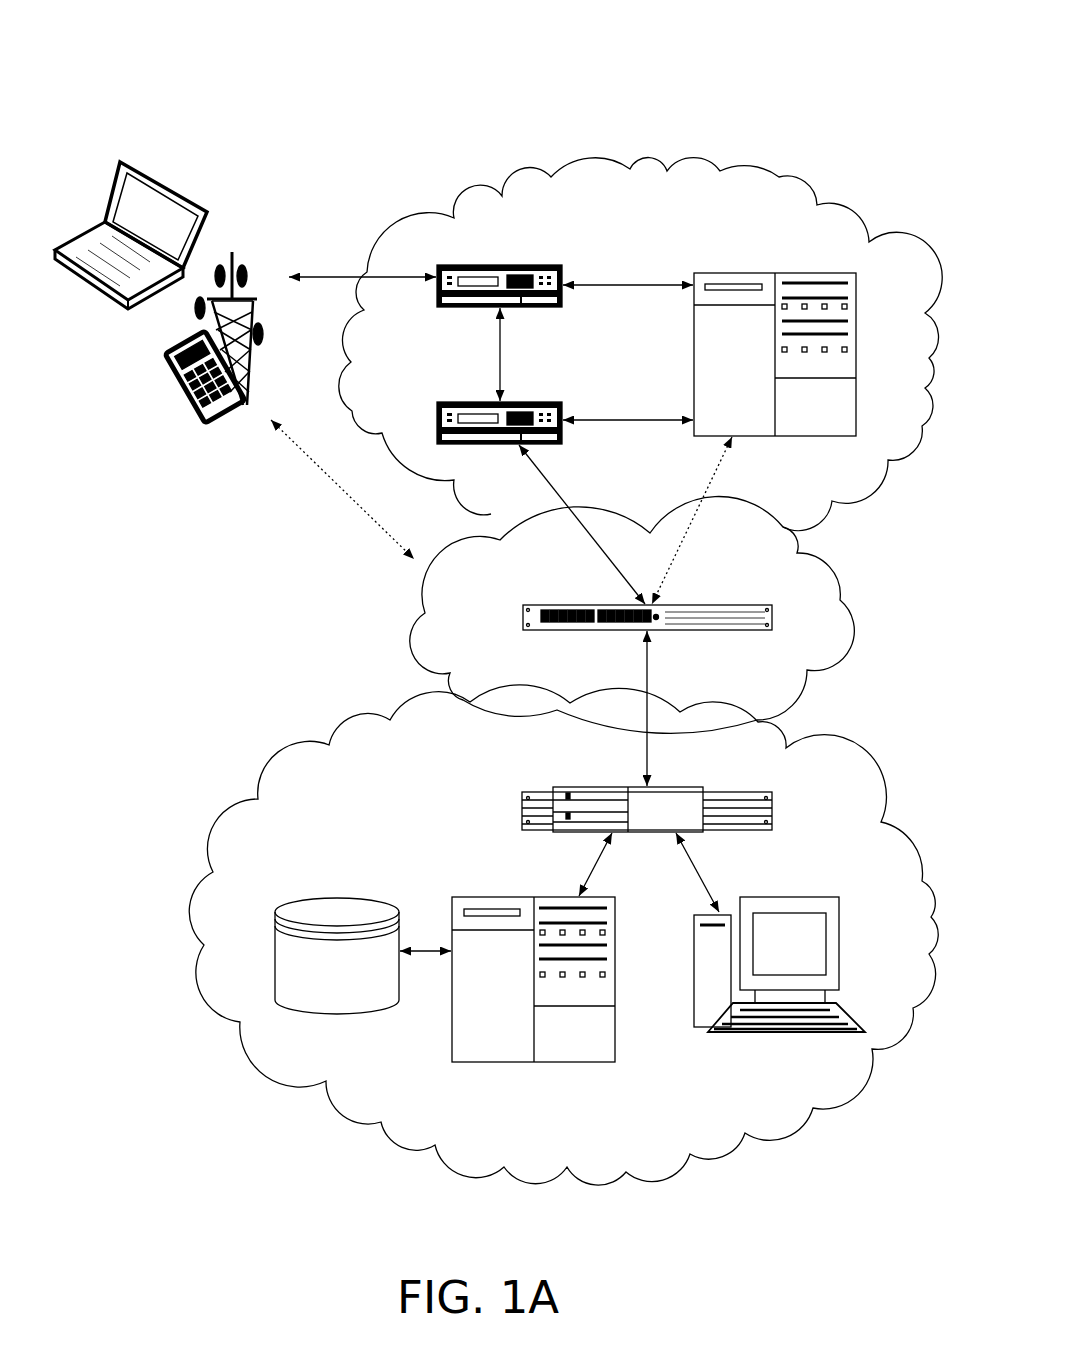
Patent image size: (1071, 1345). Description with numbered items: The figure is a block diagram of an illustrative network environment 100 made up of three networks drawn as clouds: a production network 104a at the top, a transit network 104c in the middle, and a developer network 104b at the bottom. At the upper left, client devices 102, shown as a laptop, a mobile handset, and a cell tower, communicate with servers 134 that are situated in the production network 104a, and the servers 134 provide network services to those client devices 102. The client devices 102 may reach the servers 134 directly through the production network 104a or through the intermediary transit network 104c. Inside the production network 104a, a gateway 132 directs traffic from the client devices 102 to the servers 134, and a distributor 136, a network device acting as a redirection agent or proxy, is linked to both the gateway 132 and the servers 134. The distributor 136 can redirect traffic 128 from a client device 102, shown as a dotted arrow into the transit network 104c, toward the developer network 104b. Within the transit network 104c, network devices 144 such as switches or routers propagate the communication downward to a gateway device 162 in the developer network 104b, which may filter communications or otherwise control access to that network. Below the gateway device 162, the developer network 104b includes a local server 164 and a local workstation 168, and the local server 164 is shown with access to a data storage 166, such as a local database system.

The network environment 100 is at (152, 50).
The client devices 102 is at (159, 292).
The production network 104a is at (778, 164).
The developer network 104b is at (843, 742).
The transit network 104c is at (827, 565).
The traffic 128 is at (360, 507).
The gateway 132 is at (499, 269).
The servers 134 is at (775, 336).
The distributor 136 is at (486, 407).
The network devices 144 is at (616, 614).
The gateway device 162 is at (615, 808).
The local server 164 is at (533, 999).
The data storage 166 is at (337, 968).
The local workstation 168 is at (779, 986).